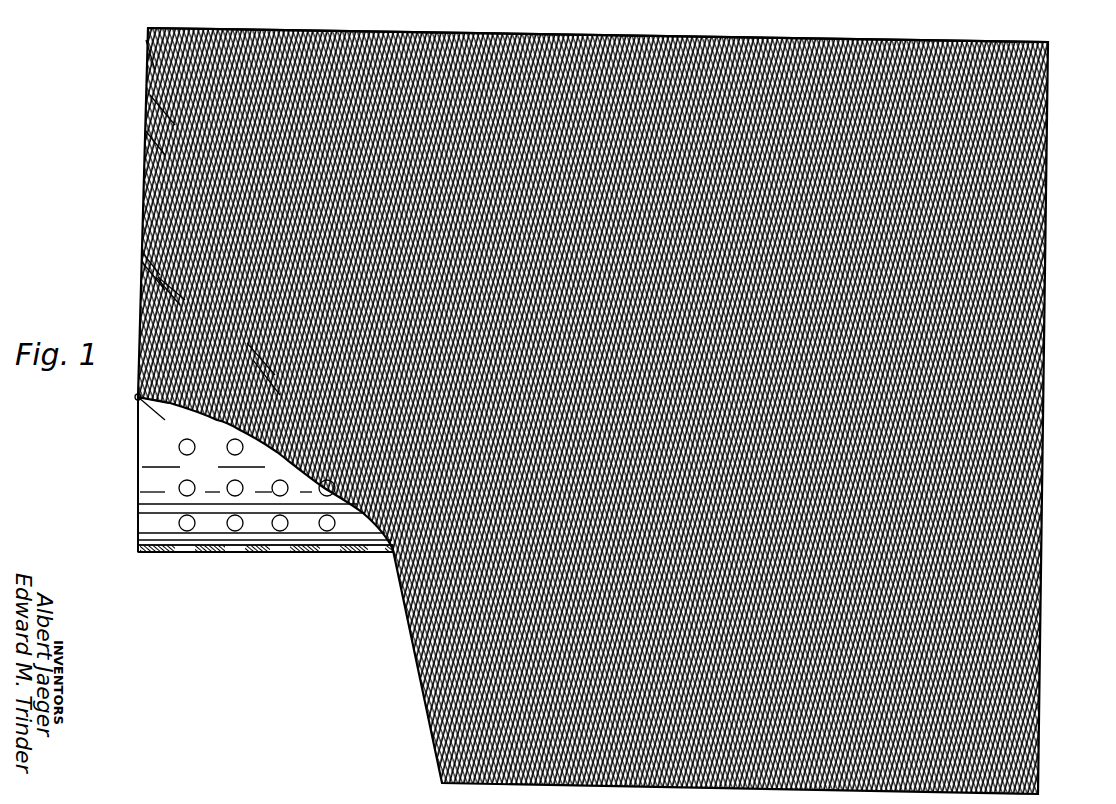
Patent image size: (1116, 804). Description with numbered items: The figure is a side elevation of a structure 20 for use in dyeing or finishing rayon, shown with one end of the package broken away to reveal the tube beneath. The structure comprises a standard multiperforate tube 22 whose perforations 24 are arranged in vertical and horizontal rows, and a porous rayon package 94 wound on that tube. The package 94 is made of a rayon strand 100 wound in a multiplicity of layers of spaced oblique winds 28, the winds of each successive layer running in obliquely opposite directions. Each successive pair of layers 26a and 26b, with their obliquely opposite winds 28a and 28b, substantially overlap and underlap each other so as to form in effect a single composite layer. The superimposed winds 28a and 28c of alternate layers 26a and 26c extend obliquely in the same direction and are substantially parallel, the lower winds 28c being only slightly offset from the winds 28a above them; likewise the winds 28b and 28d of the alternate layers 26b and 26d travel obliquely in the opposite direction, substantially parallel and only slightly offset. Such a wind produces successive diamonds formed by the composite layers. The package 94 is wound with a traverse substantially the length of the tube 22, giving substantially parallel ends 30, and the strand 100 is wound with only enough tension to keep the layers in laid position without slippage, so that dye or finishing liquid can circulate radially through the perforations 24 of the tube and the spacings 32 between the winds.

The structure for use in dyeing or finishing rayon 20 is at (350, 568).
The multiperforate tube 22 is at (290, 556).
The perforations 24 is at (190, 554).
The layer 26a is at (138, 395).
The layer 26b is at (142, 252).
The layer 26c is at (253, 360).
The layer 26d is at (157, 278).
The spaced oblique winds 28 is at (147, 120).
The oblique wind 28a is at (138, 398).
The oblique wind 28b is at (142, 262).
The oblique wind 28c is at (247, 343).
The oblique wind 28d is at (158, 277).
The ends 30 is at (143, 29).
The spacings 32 is at (145, 62).
The rayon package 94 is at (145, 142).
The rayon strand 100 is at (138, 399).